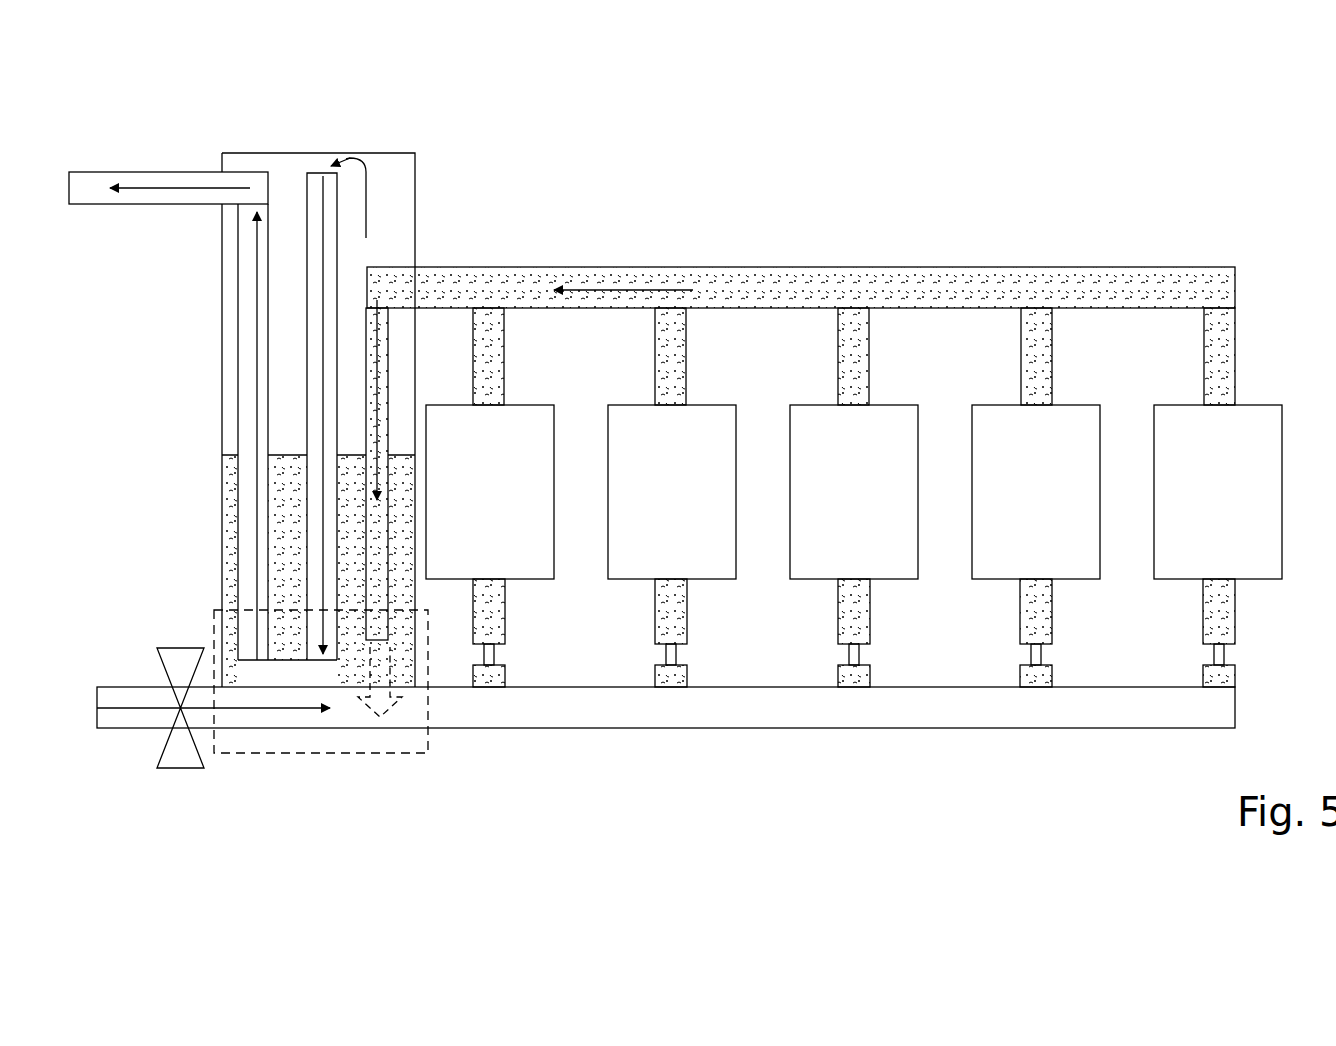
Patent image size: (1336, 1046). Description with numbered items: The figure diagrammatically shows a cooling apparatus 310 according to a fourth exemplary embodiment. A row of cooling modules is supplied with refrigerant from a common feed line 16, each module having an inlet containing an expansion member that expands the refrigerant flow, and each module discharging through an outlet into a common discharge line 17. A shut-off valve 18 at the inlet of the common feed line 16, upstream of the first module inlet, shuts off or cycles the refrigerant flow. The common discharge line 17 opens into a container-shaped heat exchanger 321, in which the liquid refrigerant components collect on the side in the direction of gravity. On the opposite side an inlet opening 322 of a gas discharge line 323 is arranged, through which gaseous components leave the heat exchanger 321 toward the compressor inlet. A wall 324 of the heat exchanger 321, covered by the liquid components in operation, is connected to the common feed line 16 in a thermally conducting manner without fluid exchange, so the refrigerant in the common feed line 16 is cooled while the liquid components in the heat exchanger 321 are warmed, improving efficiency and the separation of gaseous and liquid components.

The cooling apparatus 310 is at (963, 195).
The heat exchanger 321 is at (415, 207).
The inlet opening 322 is at (316, 172).
The gas discharge line 323 is at (185, 172).
The wall 324 is at (423, 687).
The common discharge line 17 is at (820, 280).
The common feed line 16 is at (743, 713).
The shut-off valve 18 is at (168, 750).